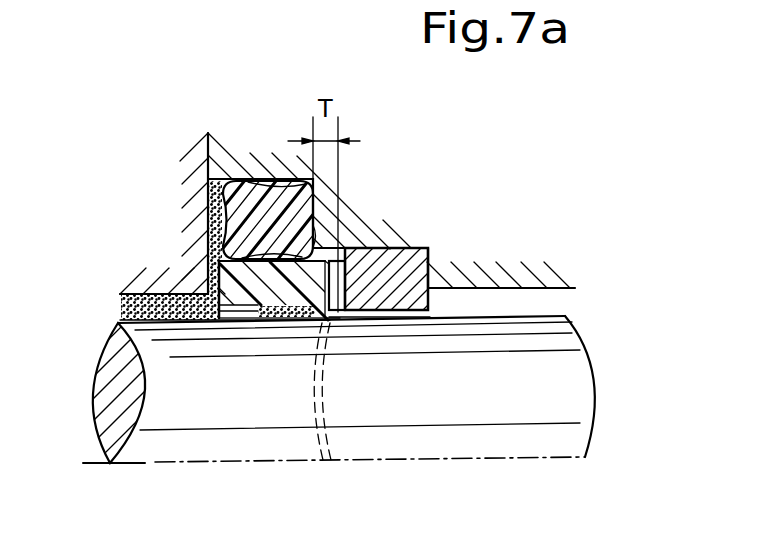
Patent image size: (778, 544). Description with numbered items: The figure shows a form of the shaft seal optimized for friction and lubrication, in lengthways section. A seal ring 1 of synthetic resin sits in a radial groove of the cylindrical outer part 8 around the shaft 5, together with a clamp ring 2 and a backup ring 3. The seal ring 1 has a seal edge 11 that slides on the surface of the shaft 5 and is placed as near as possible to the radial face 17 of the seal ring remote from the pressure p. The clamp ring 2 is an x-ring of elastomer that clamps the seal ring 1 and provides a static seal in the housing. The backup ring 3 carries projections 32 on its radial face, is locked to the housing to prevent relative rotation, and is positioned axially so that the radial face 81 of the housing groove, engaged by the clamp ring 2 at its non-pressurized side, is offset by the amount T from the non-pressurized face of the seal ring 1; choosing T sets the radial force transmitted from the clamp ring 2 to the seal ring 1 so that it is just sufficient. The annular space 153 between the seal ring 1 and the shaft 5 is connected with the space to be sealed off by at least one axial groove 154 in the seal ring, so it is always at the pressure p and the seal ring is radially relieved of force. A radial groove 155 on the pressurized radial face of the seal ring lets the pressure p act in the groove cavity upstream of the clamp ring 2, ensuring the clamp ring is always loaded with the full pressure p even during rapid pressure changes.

The seal ring 1 is at (296, 262).
The clamp ring 2 is at (263, 208).
The backup ring 3 is at (390, 250).
The shaft 5 is at (560, 350).
The cylindrical outer part 8 is at (468, 276).
The seal edge 11 is at (332, 320).
The radial face 17 is at (358, 312).
The projections 32 is at (342, 280).
The radial face of the groove 81 is at (316, 212).
The annular space 153 is at (331, 323).
The axial groove 154 is at (232, 305).
The radial groove 155 is at (222, 288).
The pressure p is at (215, 214).